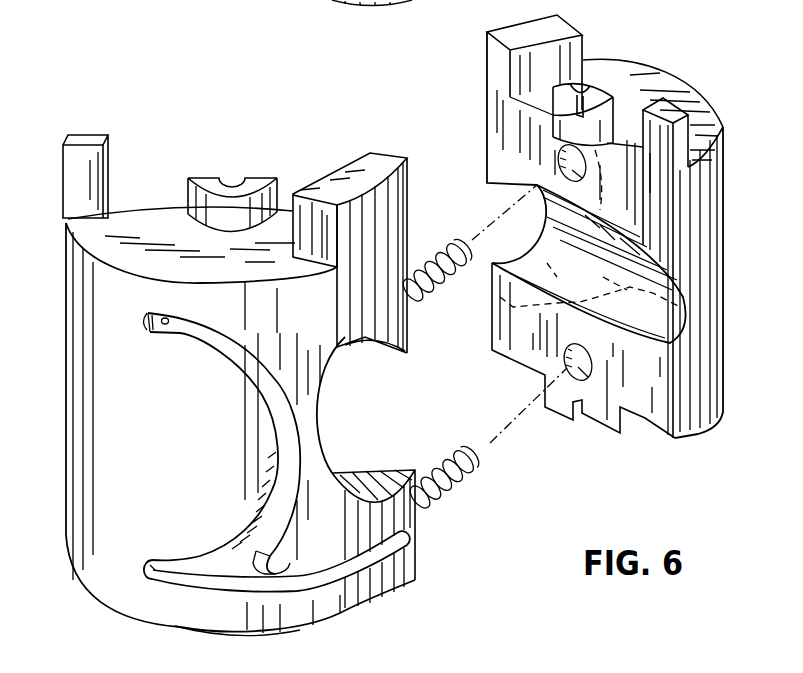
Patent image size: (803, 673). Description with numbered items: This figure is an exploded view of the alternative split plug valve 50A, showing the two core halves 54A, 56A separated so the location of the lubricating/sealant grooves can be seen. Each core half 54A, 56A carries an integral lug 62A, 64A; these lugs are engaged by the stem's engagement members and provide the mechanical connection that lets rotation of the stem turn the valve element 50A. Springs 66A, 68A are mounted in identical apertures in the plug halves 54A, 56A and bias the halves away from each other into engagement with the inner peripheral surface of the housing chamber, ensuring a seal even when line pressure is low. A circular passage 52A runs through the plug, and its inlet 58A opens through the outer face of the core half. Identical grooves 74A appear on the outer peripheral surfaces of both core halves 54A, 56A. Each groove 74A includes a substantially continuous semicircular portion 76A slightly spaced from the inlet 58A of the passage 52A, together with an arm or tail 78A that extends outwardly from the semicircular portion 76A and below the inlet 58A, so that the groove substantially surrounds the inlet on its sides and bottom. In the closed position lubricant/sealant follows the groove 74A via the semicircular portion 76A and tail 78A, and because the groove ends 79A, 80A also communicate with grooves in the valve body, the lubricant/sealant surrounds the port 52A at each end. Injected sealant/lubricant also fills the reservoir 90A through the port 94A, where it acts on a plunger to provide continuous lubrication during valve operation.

The alternative split plug valve 50A is at (558, 478).
The circular passage 52A is at (383, 487).
The core half 54A is at (407, 178).
The core half 56A is at (630, 75).
The inlet 58A is at (327, 388).
The integral lug 62A is at (570, 28).
The integral lug 64A is at (340, 177).
The spring 66A is at (447, 497).
The spring 68A is at (445, 278).
The groove 74A is at (292, 562).
The semicircular portion 76A is at (258, 363).
The arm or tail 78A is at (373, 570).
The groove end 79A is at (155, 568).
The groove end 80A is at (140, 329).
The reservoir 90A is at (292, 0).
The port 94A is at (168, 320).